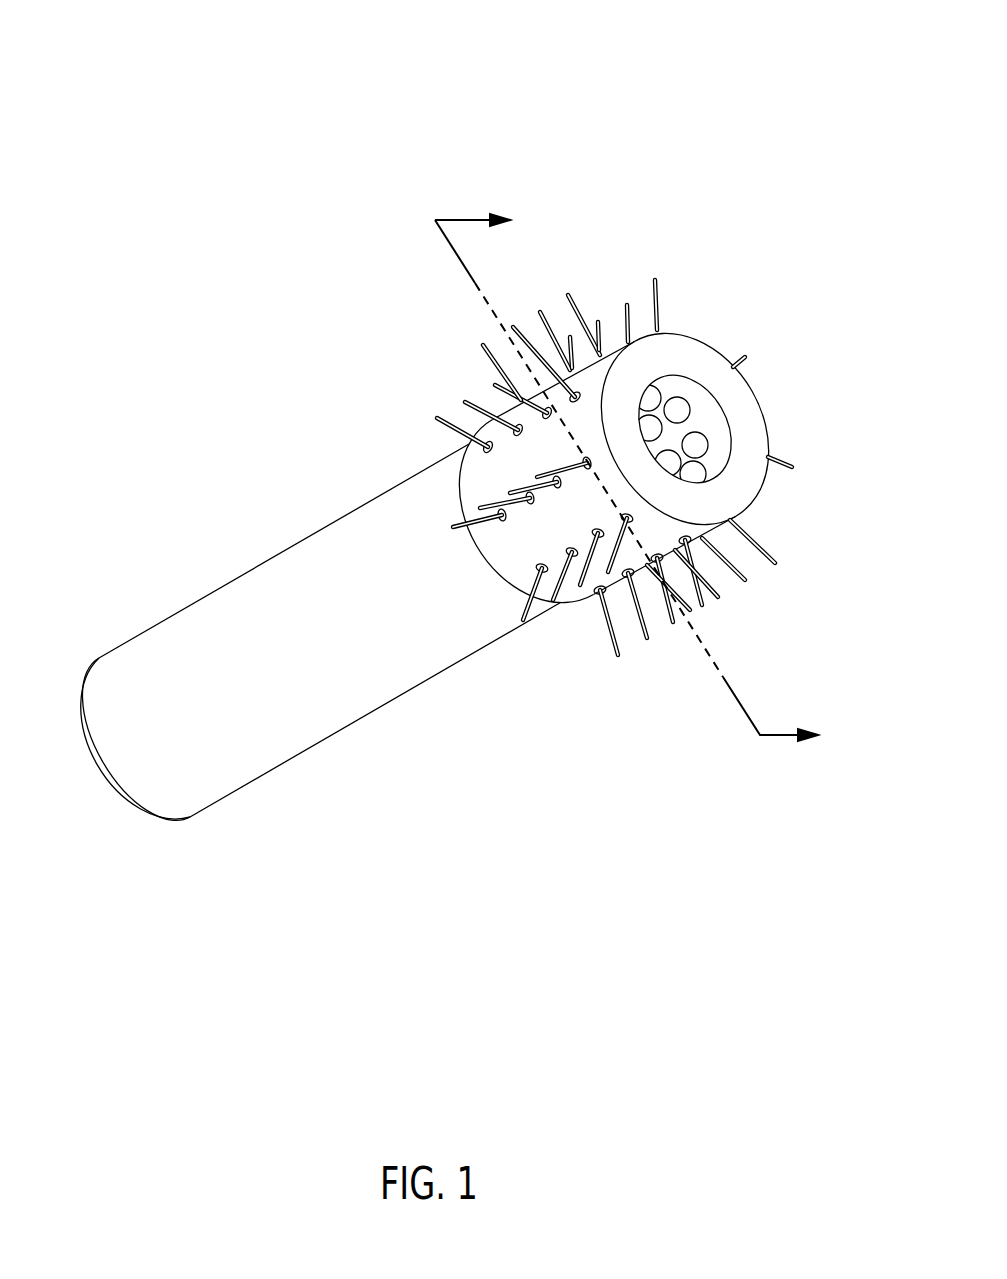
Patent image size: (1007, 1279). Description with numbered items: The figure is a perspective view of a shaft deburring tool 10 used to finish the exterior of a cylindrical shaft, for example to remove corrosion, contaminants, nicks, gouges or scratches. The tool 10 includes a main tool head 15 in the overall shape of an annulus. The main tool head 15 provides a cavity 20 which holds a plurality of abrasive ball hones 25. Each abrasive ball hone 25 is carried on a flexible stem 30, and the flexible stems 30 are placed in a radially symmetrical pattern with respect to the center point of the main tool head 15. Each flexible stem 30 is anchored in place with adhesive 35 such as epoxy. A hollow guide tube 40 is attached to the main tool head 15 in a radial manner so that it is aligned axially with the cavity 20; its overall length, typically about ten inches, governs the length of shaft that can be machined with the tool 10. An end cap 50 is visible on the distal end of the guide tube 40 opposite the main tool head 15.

The shaft deburring tool 10 is at (449, 463).
The main tool head 15 is at (652, 350).
The cavity 20 is at (716, 427).
The abrasive ball hone 25 is at (678, 407).
The flexible stem 30 is at (542, 312).
The adhesive 35 is at (495, 518).
The guide tube 40 is at (238, 638).
The end cap 50 is at (102, 773).